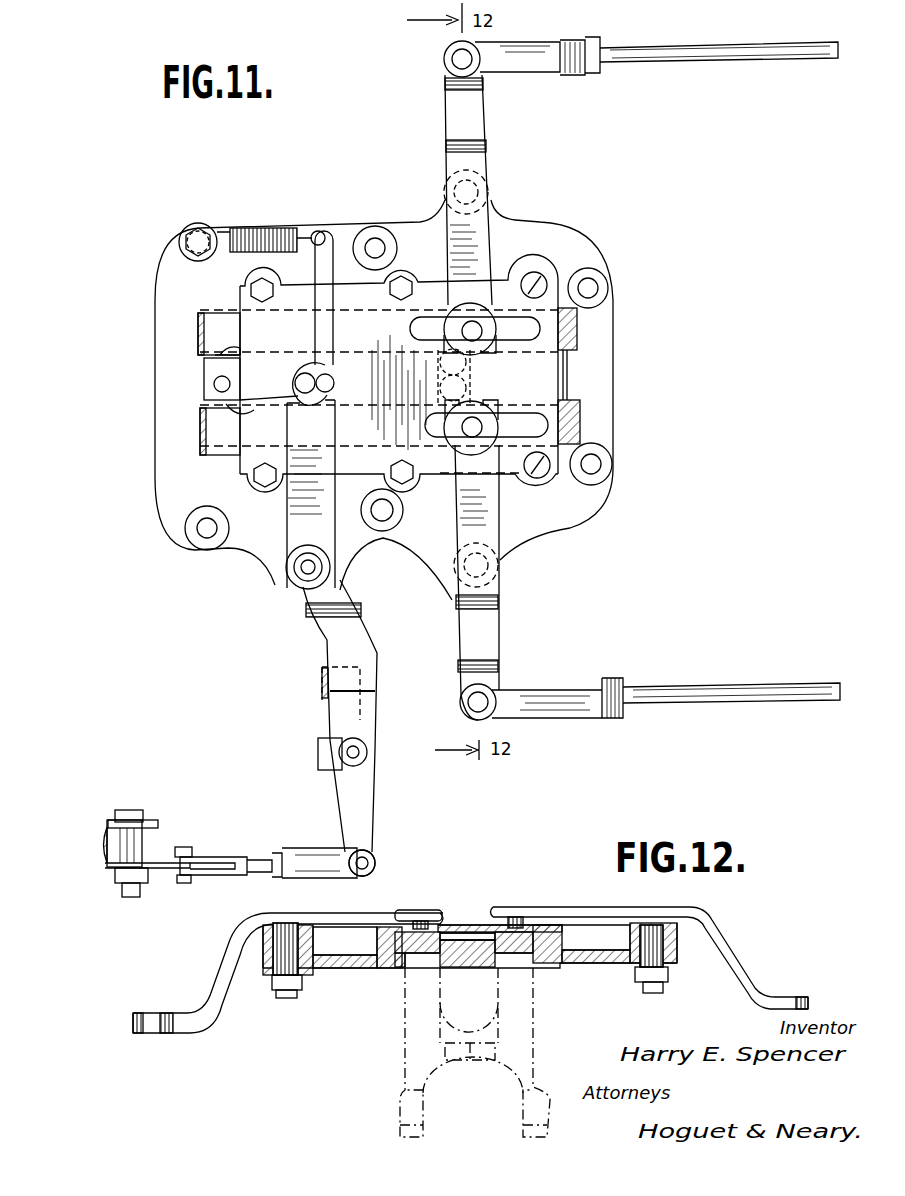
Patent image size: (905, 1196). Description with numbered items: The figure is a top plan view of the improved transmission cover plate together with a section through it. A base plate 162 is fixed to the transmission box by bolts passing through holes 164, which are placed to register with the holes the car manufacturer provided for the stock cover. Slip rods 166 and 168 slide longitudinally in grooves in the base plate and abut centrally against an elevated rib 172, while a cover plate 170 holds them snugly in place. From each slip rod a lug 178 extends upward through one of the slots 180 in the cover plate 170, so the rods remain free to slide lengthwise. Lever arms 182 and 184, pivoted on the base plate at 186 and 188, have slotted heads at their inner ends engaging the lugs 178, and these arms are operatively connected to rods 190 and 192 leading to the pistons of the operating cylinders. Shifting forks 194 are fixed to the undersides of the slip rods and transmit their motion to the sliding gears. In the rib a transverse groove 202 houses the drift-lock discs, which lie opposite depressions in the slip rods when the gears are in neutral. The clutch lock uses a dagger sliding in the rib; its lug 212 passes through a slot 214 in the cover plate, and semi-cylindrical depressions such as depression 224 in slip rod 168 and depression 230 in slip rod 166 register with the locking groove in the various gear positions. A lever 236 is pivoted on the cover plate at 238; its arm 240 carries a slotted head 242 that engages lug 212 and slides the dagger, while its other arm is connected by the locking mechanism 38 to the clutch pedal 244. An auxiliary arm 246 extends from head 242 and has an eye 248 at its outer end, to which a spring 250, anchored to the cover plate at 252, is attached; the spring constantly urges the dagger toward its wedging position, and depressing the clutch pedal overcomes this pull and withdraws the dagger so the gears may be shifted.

In FIG. 11, the automatic locking mechanism 38 is at (248, 857).
In FIG. 11, the base plate 162 is at (600, 368).
In FIG. 12, the base plate 162 is at (350, 970).
In FIG. 11, the holes 164 is at (378, 248).
In FIG. 11, the slip rod 166 is at (200, 428).
In FIG. 12, the slip rod 166 is at (420, 973).
In FIG. 11, the slip rod 168 is at (213, 336).
In FIG. 12, the slip rod 168 is at (500, 947).
In FIG. 11, the cover plate 170 is at (240, 305).
In FIG. 12, the cover plate 170 is at (472, 925).
In FIG. 11, the elevated rib 172 is at (227, 372).
In FIG. 12, the elevated rib 172 is at (478, 937).
In FIG. 11, the lug 178 is at (432, 295).
In FIG. 12, the lug 178 is at (422, 910).
In FIG. 11, the slots 180 is at (479, 377).
In FIG. 11, the lever arm 182 is at (490, 636).
In FIG. 12, the lever arm 182 is at (733, 960).
In FIG. 11, the lever arm 184 is at (483, 228).
In FIG. 12, the lever arm 184 is at (217, 952).
In FIG. 11, the pivot 186 is at (470, 192).
In FIG. 12, the pivot 186 is at (280, 960).
In FIG. 11, the pivot 188 is at (481, 564).
In FIG. 12, the pivot 188 is at (652, 943).
In FIG. 11, the rod 190 is at (687, 44).
In FIG. 12, the rod 190 is at (450, 912).
In FIG. 11, the rod 192 is at (500, 435).
In FIG. 12, the rod 192 is at (500, 912).
In FIG. 12, the shifting forks 194 is at (502, 1018).
In FIG. 11, the transverse groove 202 is at (467, 377).
In FIG. 11, the lug 212 is at (307, 375).
In FIG. 11, the slot 214 is at (340, 384).
In FIG. 11, the semi-cylindrical depression 224 is at (223, 354).
In FIG. 11, the semi-cylindrical depression 230 is at (232, 416).
In FIG. 11, the lever 236 is at (330, 645).
In FIG. 11, the pivot 238 is at (300, 567).
In FIG. 11, the arm 240 is at (297, 507).
In FIG. 11, the slotted head 242 is at (287, 390).
In FIG. 11, the clutch pedal 244 is at (108, 827).
In FIG. 11, the auxiliary arm 246 is at (333, 247).
In FIG. 11, the eye 248 is at (320, 236).
In FIG. 11, the spring 250 is at (270, 230).
In FIG. 11, the attachment point 252 is at (200, 238).